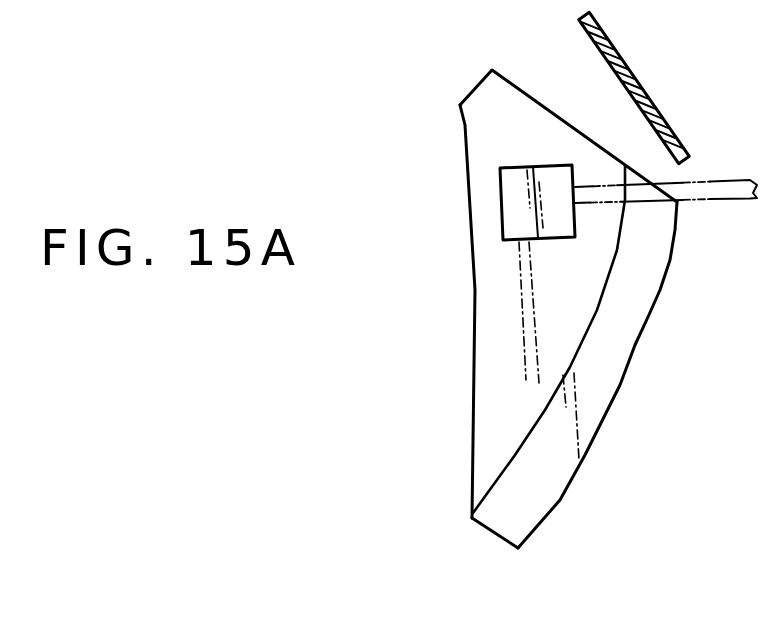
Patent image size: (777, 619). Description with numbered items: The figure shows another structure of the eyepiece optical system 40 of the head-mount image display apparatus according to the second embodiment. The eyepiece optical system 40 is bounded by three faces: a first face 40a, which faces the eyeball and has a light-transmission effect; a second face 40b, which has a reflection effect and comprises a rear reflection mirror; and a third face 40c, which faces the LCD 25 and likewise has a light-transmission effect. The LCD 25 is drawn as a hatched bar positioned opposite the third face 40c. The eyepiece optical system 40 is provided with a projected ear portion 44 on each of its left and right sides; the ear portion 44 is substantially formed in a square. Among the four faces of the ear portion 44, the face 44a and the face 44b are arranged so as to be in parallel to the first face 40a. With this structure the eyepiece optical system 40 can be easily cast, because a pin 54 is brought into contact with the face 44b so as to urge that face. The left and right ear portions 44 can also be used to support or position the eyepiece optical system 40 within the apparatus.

The eyepiece optical system 40 is at (534, 279).
The first face 40a is at (475, 333).
The second face 40b is at (613, 410).
The third face 40c is at (522, 90).
The ear portion 44 is at (556, 169).
The face of ear portion 44a is at (500, 201).
The face of ear portion 44b is at (573, 177).
The pin 54 is at (718, 201).
The LCD 25 is at (618, 53).